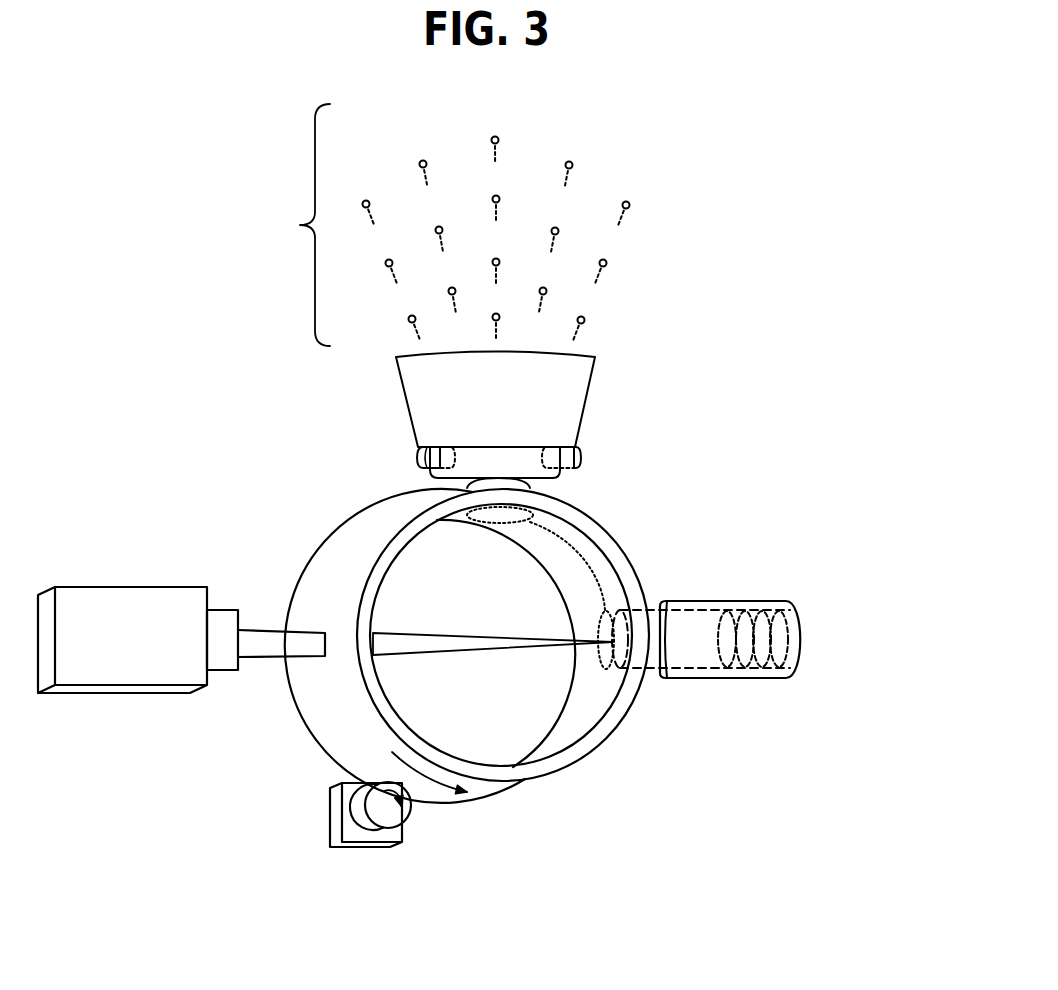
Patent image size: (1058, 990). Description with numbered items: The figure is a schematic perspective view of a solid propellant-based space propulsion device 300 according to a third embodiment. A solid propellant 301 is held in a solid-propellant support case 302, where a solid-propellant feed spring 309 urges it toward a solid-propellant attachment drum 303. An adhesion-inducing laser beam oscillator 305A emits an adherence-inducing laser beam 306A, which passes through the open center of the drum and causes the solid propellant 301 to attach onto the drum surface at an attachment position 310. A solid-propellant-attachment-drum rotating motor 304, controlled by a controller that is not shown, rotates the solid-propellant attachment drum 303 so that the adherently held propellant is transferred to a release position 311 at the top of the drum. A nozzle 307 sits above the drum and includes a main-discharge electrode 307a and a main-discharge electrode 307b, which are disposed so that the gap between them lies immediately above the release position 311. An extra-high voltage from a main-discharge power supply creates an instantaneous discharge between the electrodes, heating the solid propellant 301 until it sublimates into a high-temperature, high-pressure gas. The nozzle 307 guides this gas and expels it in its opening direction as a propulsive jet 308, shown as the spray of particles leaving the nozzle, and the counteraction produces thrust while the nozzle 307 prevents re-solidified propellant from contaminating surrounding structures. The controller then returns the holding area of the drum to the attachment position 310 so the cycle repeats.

The solid propellant-based space propulsion device 300 is at (812, 198).
The solid propellant 301 is at (712, 607).
The solid-propellant support case 302 is at (770, 600).
The solid-propellant attachment drum 303 is at (372, 515).
The solid-propellant-attachment-drum rotating motor 304 is at (370, 838).
The adhesion-inducing laser beam oscillator 305A is at (147, 587).
The adherence-inducing laser beam 306A is at (288, 632).
The nozzle 307 is at (597, 357).
The main-discharge electrode 307a is at (415, 452).
The main-discharge electrode 307b is at (585, 452).
The propulsive jet 308 is at (293, 221).
The solid-propellant feed spring 309 is at (782, 638).
The attachment position 310 is at (621, 628).
The release position 311 is at (534, 511).